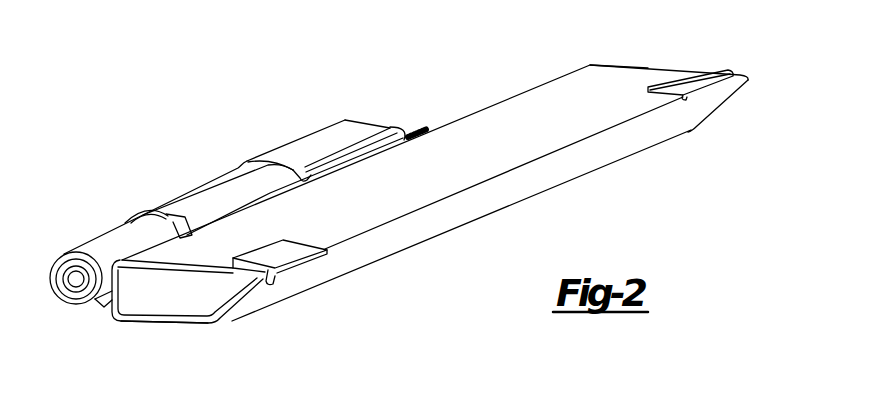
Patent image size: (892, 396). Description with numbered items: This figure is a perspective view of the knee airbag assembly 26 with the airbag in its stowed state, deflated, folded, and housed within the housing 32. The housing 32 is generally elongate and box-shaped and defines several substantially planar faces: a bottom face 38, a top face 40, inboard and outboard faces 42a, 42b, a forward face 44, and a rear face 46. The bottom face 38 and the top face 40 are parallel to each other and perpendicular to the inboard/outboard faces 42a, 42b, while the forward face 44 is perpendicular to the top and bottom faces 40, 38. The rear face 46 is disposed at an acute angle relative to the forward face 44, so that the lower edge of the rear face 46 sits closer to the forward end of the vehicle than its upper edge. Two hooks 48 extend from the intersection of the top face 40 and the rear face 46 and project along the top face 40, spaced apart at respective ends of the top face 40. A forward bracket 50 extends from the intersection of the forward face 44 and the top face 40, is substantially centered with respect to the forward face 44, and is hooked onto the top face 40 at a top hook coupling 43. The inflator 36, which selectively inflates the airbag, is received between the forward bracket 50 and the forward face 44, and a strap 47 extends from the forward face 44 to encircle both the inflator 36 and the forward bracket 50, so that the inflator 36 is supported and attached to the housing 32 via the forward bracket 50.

The knee airbag assembly 26 is at (456, 101).
The housing 32 is at (489, 131).
The inflator 36 is at (108, 240).
The bottom face 38 is at (170, 328).
The top face 40 is at (572, 97).
The inboard/outboard face 42a is at (180, 305).
The inboard/outboard face 42b is at (652, 67).
The top hook coupling 43 is at (393, 128).
The forward face 44 is at (103, 307).
The rear face 46 is at (599, 167).
The strap 47 is at (160, 212).
The hooks 48 is at (277, 243).
The forward bracket 50 is at (300, 144).